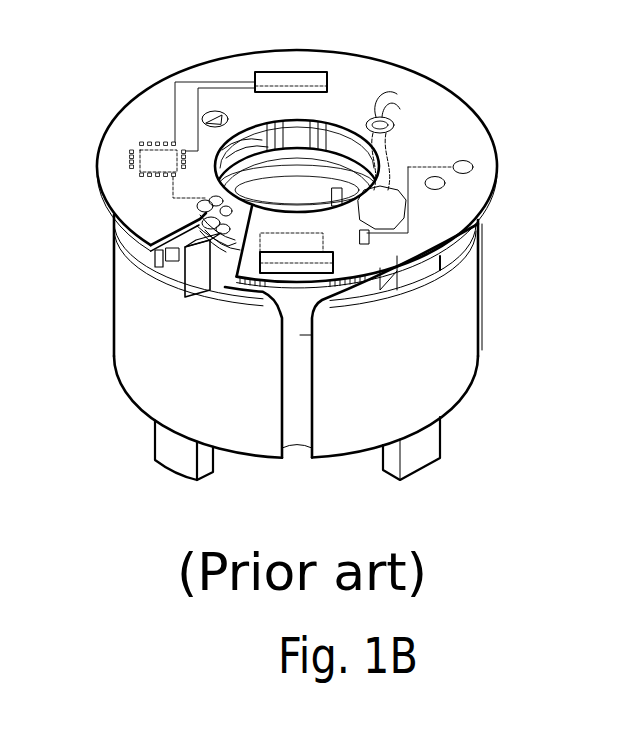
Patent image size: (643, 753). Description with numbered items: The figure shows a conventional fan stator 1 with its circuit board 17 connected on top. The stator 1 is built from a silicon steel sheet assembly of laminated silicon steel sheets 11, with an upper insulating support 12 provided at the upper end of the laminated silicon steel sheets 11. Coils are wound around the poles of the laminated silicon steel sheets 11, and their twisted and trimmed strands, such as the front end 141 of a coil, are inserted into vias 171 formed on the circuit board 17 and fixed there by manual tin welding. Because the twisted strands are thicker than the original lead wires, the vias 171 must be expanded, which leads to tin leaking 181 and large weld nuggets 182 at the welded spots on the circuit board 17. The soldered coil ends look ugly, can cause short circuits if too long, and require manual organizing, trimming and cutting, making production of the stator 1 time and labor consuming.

The stator 1 is at (512, 297).
The laminated silicon steel sheets 11 is at (463, 357).
The upper insulating support 12 is at (422, 452).
The circuit board 17 is at (470, 150).
The vias 171 is at (205, 196).
The tin leaking 181 is at (205, 235).
The weld nuggets 182 is at (193, 204).
The front end of coil 141 is at (193, 212).